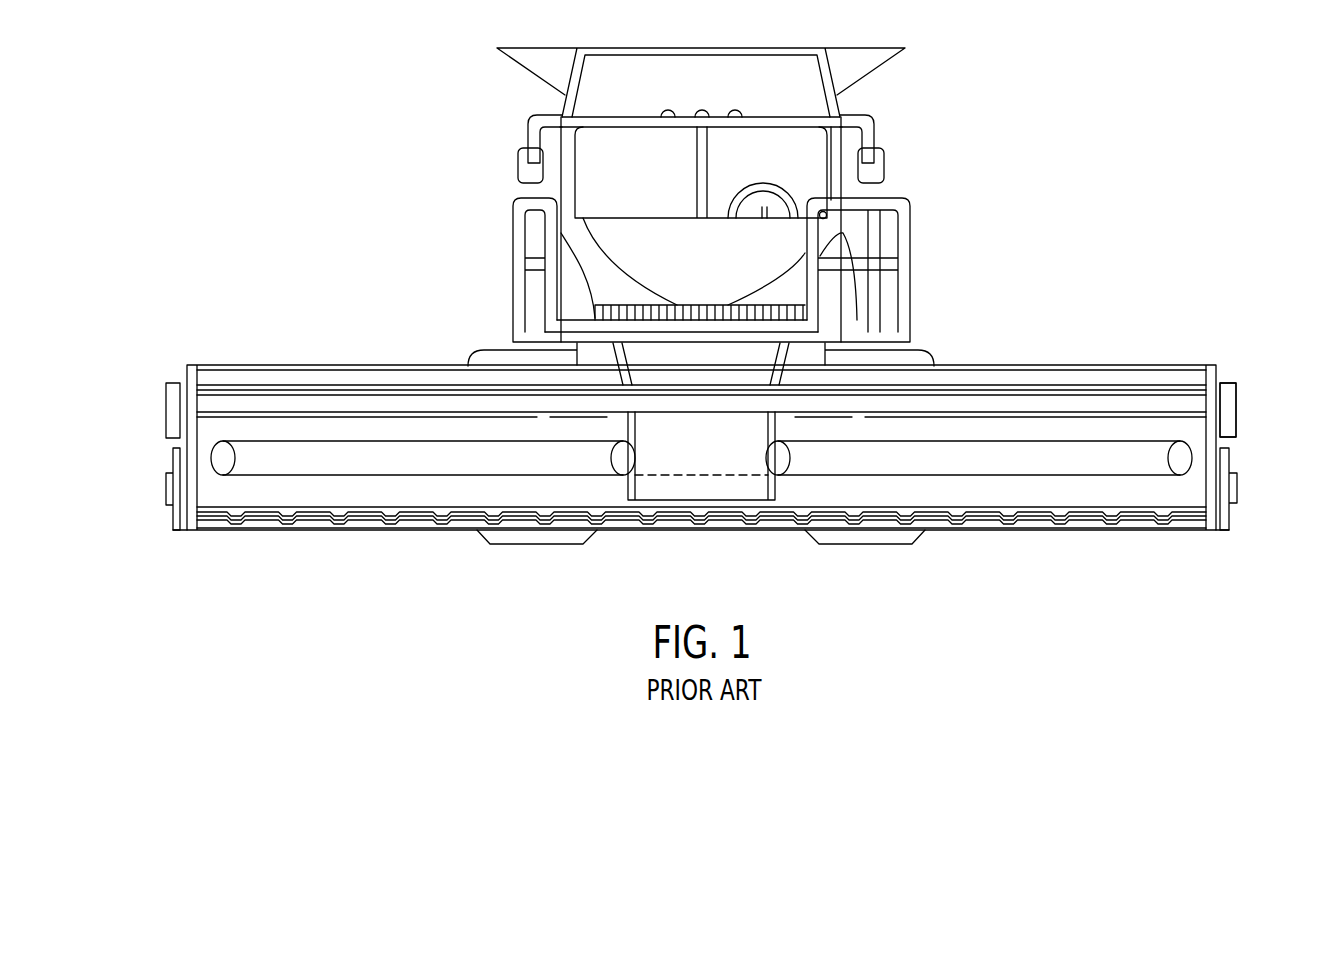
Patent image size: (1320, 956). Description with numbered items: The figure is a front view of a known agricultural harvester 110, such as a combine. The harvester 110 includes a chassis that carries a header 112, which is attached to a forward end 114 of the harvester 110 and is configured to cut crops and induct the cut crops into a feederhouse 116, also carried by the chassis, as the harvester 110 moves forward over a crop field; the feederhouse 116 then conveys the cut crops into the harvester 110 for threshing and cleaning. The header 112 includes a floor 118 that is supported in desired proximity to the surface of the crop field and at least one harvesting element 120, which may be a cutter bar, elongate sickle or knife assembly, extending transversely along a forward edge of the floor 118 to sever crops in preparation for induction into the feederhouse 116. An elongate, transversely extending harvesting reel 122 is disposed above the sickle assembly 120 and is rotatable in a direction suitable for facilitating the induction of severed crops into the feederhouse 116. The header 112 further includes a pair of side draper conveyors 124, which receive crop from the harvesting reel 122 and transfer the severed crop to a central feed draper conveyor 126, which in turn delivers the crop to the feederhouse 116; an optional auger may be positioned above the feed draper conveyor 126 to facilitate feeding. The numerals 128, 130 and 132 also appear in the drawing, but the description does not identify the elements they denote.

The agricultural harvester 110 is at (345, 80).
The header 112 is at (158, 408).
The forward end 114 is at (523, 337).
The feederhouse 116 is at (835, 345).
The floor 118 is at (272, 506).
The harvesting element 120 is at (1063, 525).
The harvesting reel 122 is at (1218, 372).
The side draper conveyors 124 is at (323, 440).
The central feed draper conveyor 126 is at (732, 465).
The knife guard 128 is at (363, 528).
The left crop divider 130 is at (170, 508).
The right crop divider 132 is at (1230, 510).